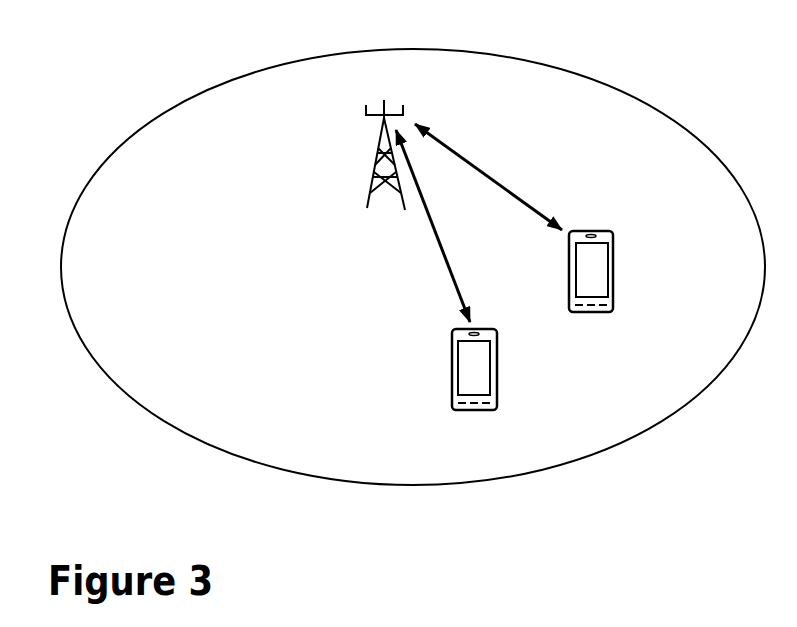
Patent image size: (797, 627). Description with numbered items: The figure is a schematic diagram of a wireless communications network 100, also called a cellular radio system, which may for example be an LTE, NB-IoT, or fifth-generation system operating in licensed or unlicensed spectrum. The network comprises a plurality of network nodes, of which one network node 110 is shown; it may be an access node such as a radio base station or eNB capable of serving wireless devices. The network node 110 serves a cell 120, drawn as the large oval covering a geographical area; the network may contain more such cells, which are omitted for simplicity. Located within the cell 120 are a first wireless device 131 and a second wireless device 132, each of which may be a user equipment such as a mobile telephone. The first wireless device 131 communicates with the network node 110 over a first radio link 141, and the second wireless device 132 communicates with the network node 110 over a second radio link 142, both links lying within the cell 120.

The wireless communications network 100 is at (38, 430).
The network node 110 is at (367, 208).
The cell 120 is at (582, 76).
The first wireless device 131 is at (612, 306).
The second wireless device 132 is at (452, 408).
The first radio link 141 is at (488, 177).
The second radio link 142 is at (430, 226).